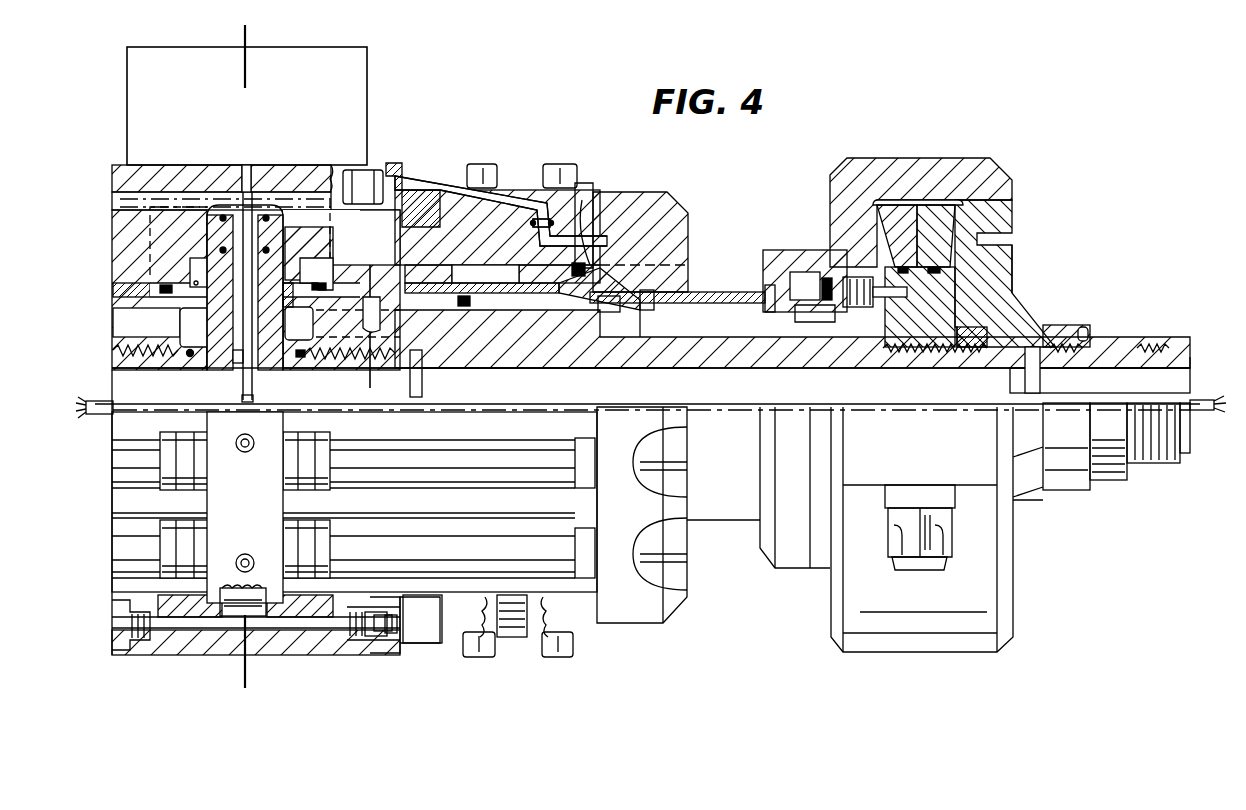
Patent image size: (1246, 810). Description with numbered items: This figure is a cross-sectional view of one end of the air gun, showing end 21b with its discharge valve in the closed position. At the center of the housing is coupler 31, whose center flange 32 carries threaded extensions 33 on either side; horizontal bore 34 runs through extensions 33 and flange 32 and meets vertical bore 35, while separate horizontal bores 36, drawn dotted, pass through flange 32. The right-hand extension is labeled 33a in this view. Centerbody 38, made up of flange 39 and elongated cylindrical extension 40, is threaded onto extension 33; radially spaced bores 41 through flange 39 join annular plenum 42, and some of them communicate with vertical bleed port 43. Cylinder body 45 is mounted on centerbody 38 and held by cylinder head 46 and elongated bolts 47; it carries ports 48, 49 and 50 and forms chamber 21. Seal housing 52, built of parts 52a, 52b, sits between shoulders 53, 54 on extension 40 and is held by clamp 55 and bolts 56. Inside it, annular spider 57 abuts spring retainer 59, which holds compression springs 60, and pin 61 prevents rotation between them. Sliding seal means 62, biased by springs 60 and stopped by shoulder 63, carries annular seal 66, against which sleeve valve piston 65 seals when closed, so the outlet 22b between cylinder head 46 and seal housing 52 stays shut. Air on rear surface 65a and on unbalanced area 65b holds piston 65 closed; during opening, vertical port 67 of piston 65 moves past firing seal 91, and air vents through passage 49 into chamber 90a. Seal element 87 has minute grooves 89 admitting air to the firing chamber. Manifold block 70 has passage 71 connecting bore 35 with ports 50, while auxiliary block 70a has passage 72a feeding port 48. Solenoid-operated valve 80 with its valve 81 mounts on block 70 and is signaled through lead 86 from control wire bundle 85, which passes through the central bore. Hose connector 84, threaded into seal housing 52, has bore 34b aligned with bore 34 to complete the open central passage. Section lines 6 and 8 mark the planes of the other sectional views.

The section line 6 is at (236, 33).
The section line 8 is at (388, 255).
The valve 81 is at (367, 52).
The manifold block 70 is at (277, 172).
The passage 71 is at (184, 195).
The auxiliary block 70a is at (436, 188).
The piston cylinder body 45 is at (112, 250).
The port 49 is at (498, 208).
The passage 72a is at (538, 192).
The port 48 is at (548, 220).
The seal element 87 is at (588, 245).
The cylinder head 46 is at (656, 192).
The end of gun / chamber 21b is at (754, 178).
The clamp 55 is at (992, 162).
The pin 61 is at (875, 277).
The annular spider 57 is at (946, 250).
The seal housing 52 is at (1036, 246).
The seal housing part 52a is at (770, 250).
The sliding seal means 62 is at (832, 268).
The annular spring retainer 59 is at (866, 278).
The seal housing part 52b is at (1014, 265).
The outlet 22b is at (738, 268).
The shoulder 63 is at (815, 272).
The minute grooves 89 is at (688, 268).
The shoulder 54 is at (1082, 328).
The port 50 is at (137, 216).
The center flange 32 is at (309, 253).
The flange 39 is at (319, 272).
The chamber 90a is at (485, 274).
The horizontal bores 36 is at (192, 280).
The unbalanced area 65b is at (576, 290).
The rear surface 65a is at (464, 306).
The centerbody 38 is at (550, 318).
The solenoid-operated valve 80 is at (605, 303).
The firing seal 91 is at (650, 303).
The chamber 21 is at (728, 334).
The annular seal 66 is at (762, 300).
The compression springs 60 is at (822, 318).
The horizontal bore 34b is at (1195, 360).
The control wire bundle 85 is at (1208, 400).
The horizontal bores 41 is at (120, 316).
The annular plenum 42 is at (183, 322).
The threaded extension 33 is at (160, 366).
The horizontal bore 34 is at (197, 399).
The vertical bore 35 is at (245, 302).
The lead 86 is at (249, 380).
The coupler 31 is at (300, 370).
The vertical bleed port 43 is at (338, 362).
The sleeve valve piston 65 is at (513, 340).
The base portion 33a is at (560, 368).
The vertical port 67 is at (637, 340).
The cylindrical extension 40 is at (818, 366).
The shoulder 53 is at (893, 352).
The elongated bolts 47 is at (143, 460).
The bolts 56 is at (955, 490).
The hose connector 84 is at (1148, 463).